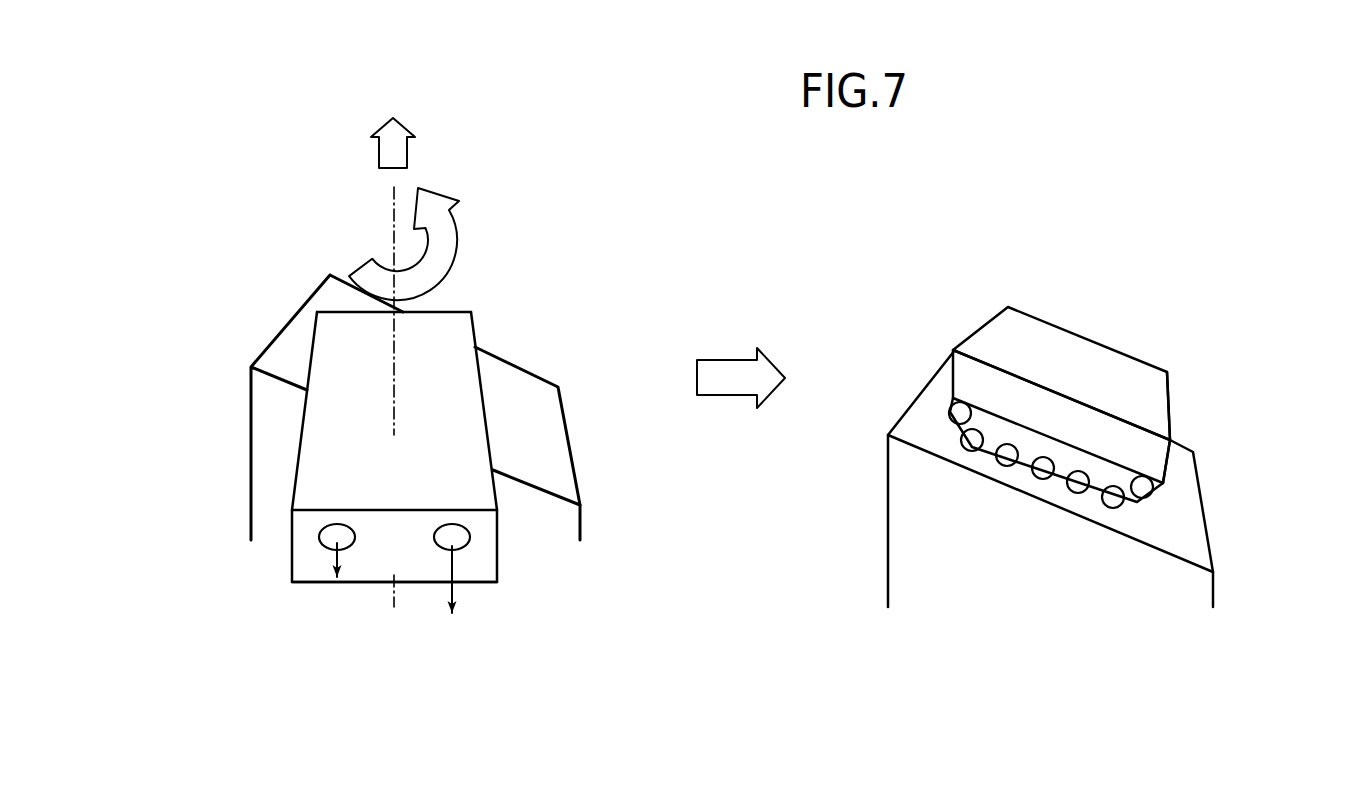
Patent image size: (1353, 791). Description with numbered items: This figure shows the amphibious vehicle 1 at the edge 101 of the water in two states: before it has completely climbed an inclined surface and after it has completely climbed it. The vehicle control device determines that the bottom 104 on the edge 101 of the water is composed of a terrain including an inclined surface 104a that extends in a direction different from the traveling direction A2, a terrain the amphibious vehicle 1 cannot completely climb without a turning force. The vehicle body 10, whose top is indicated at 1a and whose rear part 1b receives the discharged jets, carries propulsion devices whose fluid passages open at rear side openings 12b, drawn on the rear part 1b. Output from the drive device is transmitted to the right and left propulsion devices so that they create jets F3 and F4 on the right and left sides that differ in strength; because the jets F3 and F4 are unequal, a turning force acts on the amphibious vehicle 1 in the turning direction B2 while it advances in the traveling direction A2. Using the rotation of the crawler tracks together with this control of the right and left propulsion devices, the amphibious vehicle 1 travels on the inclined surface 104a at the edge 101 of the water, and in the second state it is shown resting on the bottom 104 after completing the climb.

The amphibious vehicle 1 is at (338, 603).
The top surface of robot 1a is at (443, 306).
The rear part 1b is at (507, 578).
The vehicle body 10 is at (284, 540).
The rear side openings 12b is at (332, 548).
The edge of water 101 is at (204, 493).
The bottom of water 104 is at (568, 558).
The inclined surface 104a is at (553, 457).
The traveling direction A2 is at (405, 155).
The turning direction B2 is at (460, 235).
The jet F3 is at (345, 552).
The jet F4 is at (452, 555).